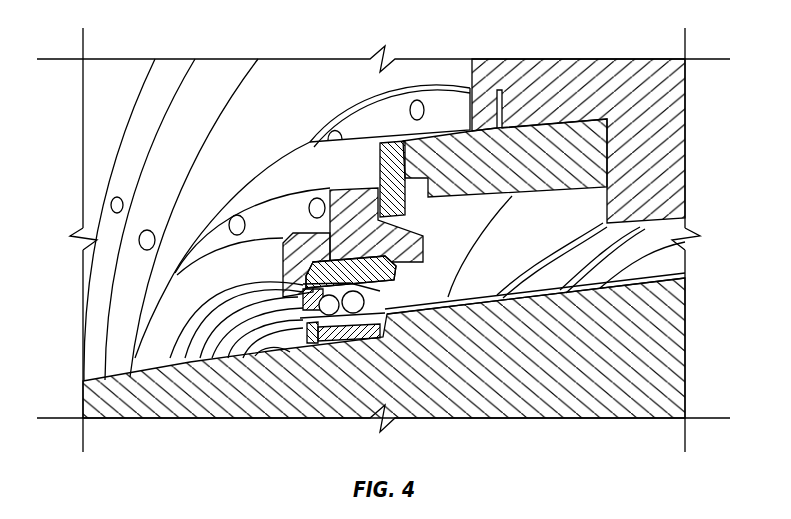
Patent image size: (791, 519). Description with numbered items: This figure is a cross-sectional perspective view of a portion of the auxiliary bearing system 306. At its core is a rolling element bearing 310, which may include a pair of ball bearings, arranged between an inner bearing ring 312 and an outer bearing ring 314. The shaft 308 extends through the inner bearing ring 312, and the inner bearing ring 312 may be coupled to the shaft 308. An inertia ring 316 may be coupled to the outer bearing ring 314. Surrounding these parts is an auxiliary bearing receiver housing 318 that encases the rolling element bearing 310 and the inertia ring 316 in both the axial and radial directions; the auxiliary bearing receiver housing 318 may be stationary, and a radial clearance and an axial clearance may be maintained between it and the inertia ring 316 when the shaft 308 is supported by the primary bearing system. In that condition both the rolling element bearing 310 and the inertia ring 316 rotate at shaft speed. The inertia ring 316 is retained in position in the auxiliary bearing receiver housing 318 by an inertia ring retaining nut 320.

The auxiliary bearing system 306 is at (217, 190).
The shaft 308 is at (550, 373).
The rolling element bearing 310 is at (350, 322).
The inner bearing ring 312 is at (390, 325).
The outer bearing ring 314 is at (378, 293).
The inertia ring 316 is at (342, 267).
The auxiliary bearing receiver housing 318 is at (342, 210).
The inertia ring retaining nut 320 is at (284, 271).